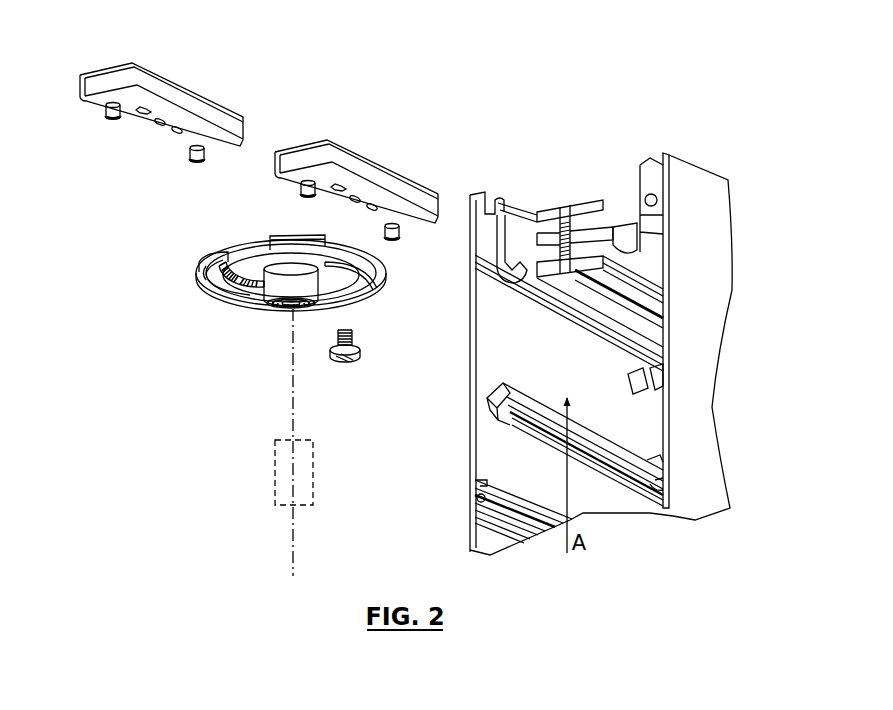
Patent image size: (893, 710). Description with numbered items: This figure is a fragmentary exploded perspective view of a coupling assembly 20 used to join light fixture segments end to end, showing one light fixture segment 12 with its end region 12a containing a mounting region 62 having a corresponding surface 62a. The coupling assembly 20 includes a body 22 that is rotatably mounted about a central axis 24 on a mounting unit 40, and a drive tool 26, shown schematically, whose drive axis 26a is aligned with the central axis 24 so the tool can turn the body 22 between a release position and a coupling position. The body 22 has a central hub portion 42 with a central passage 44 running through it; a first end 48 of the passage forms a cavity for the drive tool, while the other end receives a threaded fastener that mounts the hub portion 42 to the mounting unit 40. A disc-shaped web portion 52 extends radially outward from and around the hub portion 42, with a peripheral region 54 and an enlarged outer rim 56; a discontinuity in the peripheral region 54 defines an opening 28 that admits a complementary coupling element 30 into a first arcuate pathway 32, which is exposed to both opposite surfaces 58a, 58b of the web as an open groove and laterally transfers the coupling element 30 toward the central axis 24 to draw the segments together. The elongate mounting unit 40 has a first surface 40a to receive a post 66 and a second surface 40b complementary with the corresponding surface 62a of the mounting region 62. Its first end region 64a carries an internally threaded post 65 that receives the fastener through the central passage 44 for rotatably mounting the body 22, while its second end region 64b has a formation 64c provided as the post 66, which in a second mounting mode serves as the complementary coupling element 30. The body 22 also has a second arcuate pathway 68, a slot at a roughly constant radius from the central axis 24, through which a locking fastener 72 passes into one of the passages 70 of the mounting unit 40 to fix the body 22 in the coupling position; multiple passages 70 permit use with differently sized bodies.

The light fixture segment 12 is at (706, 282).
The end region 12a is at (684, 231).
The coupling assembly 20 is at (397, 103).
The body 22 is at (247, 318).
The central axis 24 is at (291, 399).
The drive tool 26 is at (274, 504).
The drive axis 26a is at (288, 552).
The opening 28 is at (193, 256).
The complementary coupling element 30 is at (172, 152).
The first arcuate pathway 32 is at (230, 301).
The mounting unit 40 is at (246, 244).
The first surface 40a is at (424, 184).
The second surface 40b is at (293, 227).
The central hub portion 42 is at (334, 308).
The central passage 44 is at (313, 313).
The first end 48 is at (281, 314).
The web portion 52 is at (245, 281).
The peripheral region 54 is at (193, 268).
The enlarged outer rim 56 is at (207, 280).
The first opposite surface 58a is at (225, 240).
The second opposite surface 58b is at (225, 281).
The mounting region 62 is at (590, 294).
The corresponding surface 62a is at (538, 294).
The first end region 64a is at (323, 144).
The second end region 64b is at (446, 202).
The formation 64c is at (412, 226).
The internally threaded post 65 is at (328, 158).
The post 66 is at (186, 162).
The second arcuate pathway 68 is at (357, 283).
The passages 70 is at (346, 196).
The locking fastener 72 is at (364, 360).